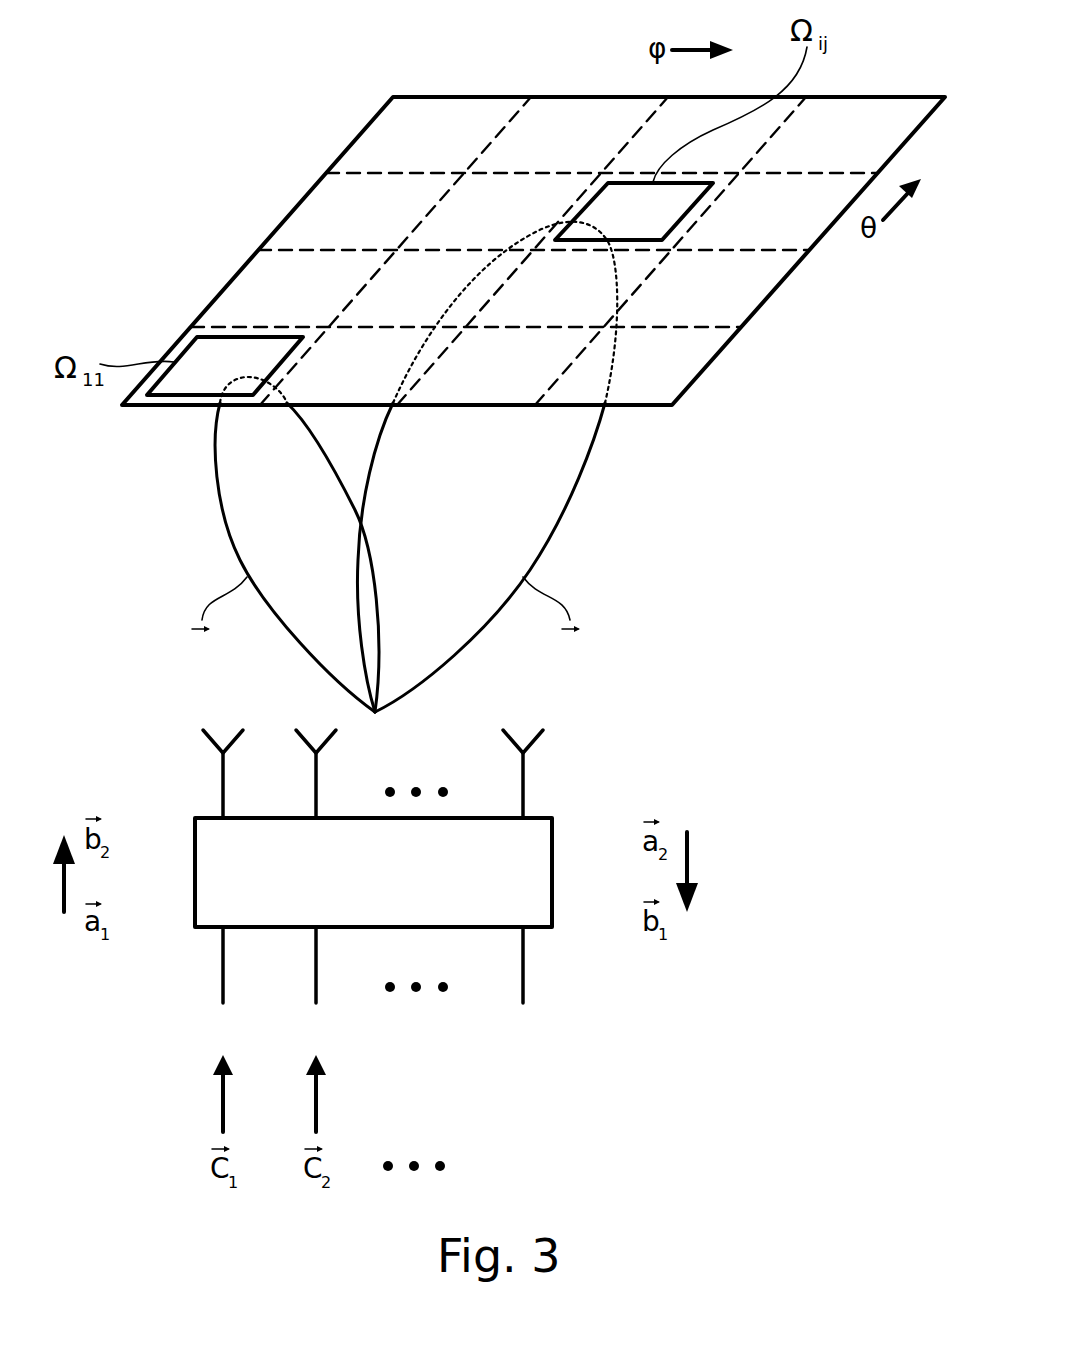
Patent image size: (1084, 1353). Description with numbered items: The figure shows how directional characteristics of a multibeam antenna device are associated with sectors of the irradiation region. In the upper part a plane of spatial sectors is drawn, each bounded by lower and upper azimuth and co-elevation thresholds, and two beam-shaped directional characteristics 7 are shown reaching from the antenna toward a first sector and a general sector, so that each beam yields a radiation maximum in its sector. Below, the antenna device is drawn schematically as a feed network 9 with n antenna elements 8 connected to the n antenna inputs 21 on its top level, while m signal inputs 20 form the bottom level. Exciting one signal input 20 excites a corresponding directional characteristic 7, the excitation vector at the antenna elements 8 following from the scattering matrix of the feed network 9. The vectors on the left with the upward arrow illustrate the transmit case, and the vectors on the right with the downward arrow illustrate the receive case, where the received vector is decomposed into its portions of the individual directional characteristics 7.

The directional characteristic 7 is at (213, 462).
The antenna element 8 is at (532, 748).
The feed network 9 is at (386, 892).
The signal input 20 is at (572, 934).
The antenna input 21 is at (572, 816).